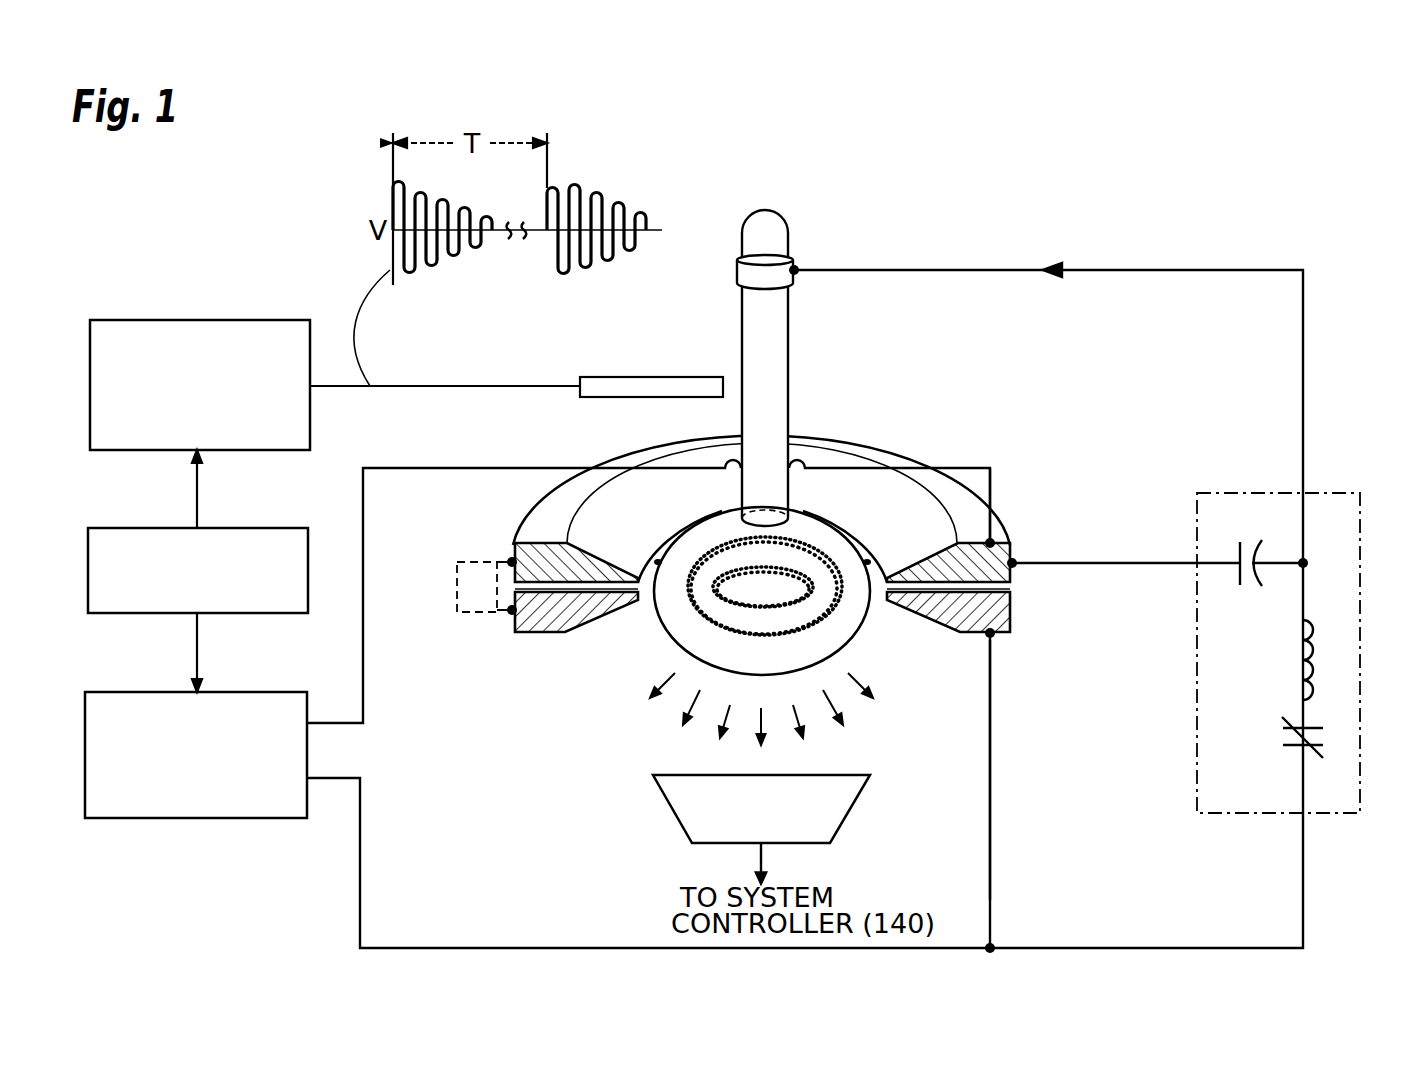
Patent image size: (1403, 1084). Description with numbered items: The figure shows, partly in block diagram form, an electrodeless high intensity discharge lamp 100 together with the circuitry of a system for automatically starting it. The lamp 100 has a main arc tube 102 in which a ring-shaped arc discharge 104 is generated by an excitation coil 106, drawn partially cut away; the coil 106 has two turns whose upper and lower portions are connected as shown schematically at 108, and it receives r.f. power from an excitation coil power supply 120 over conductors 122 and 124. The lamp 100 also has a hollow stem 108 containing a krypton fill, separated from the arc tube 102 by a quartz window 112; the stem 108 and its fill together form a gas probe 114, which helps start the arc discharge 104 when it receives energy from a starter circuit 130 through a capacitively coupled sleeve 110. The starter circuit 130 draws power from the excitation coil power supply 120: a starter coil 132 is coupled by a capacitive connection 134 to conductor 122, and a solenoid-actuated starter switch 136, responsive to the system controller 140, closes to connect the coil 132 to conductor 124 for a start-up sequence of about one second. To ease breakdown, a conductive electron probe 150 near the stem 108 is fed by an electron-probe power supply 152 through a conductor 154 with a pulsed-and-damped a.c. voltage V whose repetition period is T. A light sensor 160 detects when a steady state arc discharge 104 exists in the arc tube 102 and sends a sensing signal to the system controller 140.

The electrodeless high intensity discharge lamp 100 is at (776, 405).
The main arc tube 102 is at (672, 645).
The arc discharge 104 is at (805, 630).
The excitation coil 106 is at (488, 522).
The hollow stem 108 is at (788, 316).
The capacitively coupled sleeve 110 is at (795, 265).
The quartz window 112 is at (770, 508).
The gas probe 114 is at (840, 357).
The excitation coil power supply 120 is at (270, 692).
The conductor 122 is at (995, 478).
The conductor 124 is at (990, 700).
The starter circuit 130 is at (1212, 492).
The starter coil 132 is at (1303, 660).
The capacitive connection 134 is at (1246, 588).
The solenoid-actuated starter switch 136 is at (1285, 735).
The system controller 140 is at (278, 528).
The electron probe 150 is at (585, 377).
The electron-probe circuit 152 is at (197, 320).
The conductor 154 is at (475, 388).
The light sensor 160 is at (665, 800).